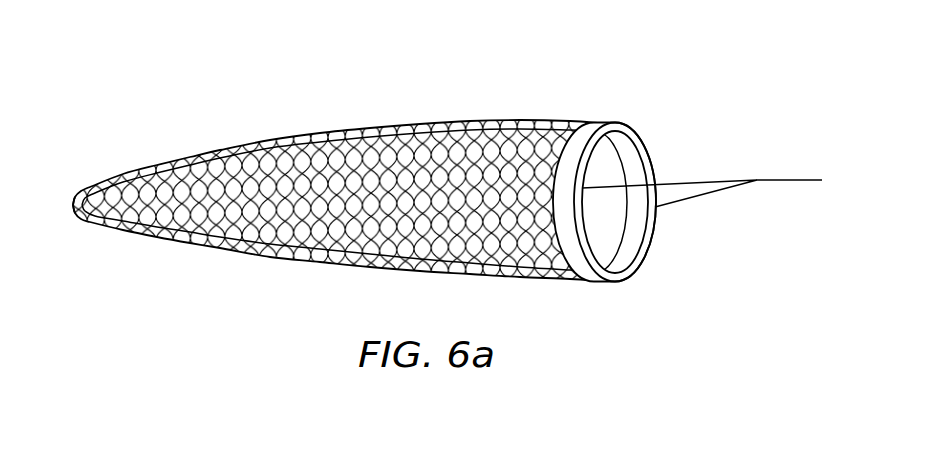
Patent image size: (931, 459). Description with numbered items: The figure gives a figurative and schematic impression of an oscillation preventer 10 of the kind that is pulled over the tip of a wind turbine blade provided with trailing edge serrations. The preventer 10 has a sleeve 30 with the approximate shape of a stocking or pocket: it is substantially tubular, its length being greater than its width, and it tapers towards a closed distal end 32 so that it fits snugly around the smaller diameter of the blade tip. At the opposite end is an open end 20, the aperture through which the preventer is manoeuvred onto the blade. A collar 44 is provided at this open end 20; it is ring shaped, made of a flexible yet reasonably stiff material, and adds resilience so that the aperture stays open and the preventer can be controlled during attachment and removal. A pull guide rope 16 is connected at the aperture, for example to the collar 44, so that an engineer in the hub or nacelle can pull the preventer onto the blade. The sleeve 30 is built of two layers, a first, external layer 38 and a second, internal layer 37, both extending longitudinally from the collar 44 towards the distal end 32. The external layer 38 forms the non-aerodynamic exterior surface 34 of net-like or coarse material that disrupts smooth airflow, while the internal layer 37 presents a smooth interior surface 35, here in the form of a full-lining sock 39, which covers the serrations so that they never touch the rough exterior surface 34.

The oscillation preventer 10 is at (431, 166).
The pull guide rope 16 is at (783, 178).
The open end 20 is at (638, 177).
The sleeve 30 is at (320, 197).
The distal end 32 is at (75, 213).
The exterior surface 34 is at (362, 268).
The interior surface 35 is at (610, 223).
The internal layer 37 is at (198, 175).
The external layer 38 is at (335, 128).
The sock 39 is at (235, 228).
The collar 44 is at (597, 120).